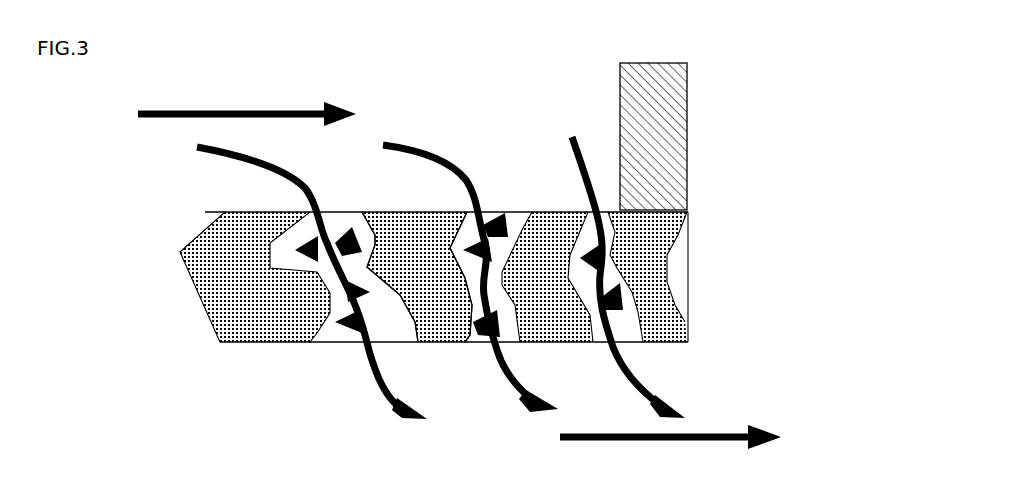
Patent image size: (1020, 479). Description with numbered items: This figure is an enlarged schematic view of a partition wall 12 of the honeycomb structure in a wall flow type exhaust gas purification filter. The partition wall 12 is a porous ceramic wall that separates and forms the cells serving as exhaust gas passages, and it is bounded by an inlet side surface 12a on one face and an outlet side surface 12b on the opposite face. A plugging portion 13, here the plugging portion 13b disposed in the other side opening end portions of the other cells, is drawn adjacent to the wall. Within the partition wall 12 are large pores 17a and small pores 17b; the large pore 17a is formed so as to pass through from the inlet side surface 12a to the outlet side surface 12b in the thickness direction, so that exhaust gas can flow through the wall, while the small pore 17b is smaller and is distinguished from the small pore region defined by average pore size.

The partition wall 12 is at (222, 278).
The inlet side surface 12a is at (535, 211).
The outlet side surface 12b is at (572, 343).
The plugging portion 13 is at (708, 136).
The plugging portion 13b is at (672, 125).
The large pore 17a is at (402, 332).
The small pore 17b is at (456, 335).